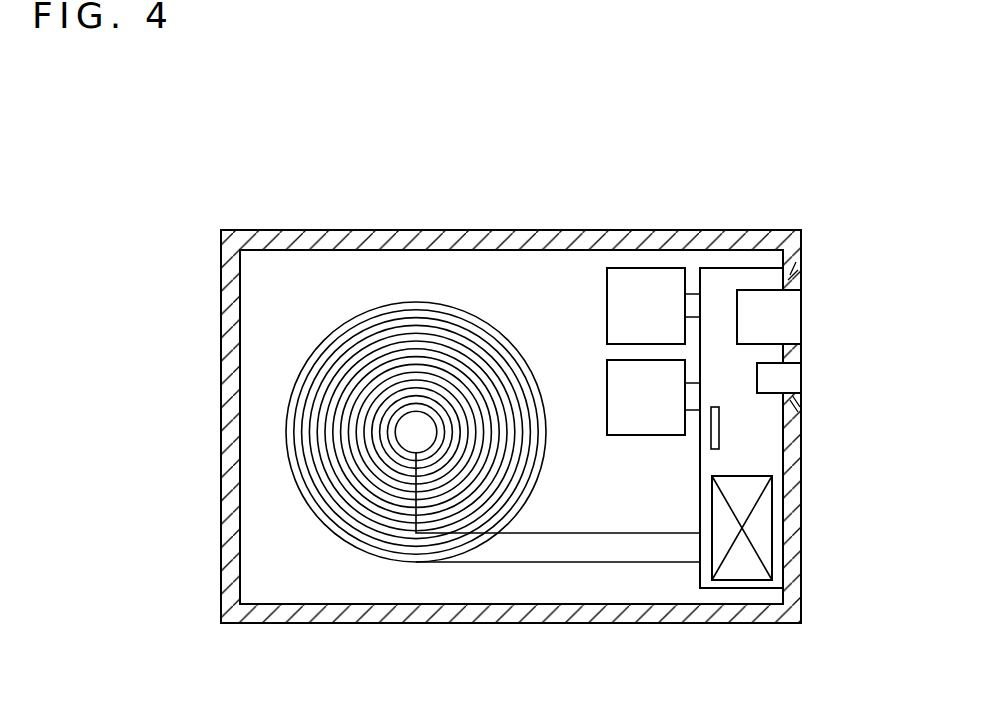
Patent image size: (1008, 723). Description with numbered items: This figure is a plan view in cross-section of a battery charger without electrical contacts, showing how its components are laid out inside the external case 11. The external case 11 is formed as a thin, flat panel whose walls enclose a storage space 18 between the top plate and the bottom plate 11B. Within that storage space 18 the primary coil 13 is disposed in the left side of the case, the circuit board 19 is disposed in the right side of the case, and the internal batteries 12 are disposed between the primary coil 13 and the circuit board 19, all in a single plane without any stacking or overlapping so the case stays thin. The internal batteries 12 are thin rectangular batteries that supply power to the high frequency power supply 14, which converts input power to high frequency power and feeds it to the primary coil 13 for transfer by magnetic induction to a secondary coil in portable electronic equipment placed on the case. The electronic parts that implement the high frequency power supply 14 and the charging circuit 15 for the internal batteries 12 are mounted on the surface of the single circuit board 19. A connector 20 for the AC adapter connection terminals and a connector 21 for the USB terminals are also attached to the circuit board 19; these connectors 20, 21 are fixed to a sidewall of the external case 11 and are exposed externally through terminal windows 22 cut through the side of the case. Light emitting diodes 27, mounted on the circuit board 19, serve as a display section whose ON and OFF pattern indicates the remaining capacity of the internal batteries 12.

The external case 11 is at (397, 182).
The bottom plate 11B is at (543, 373).
The internal batteries 12 is at (646, 288).
The primary coil 13 is at (344, 326).
The high frequency power supply 14 is at (758, 532).
The charging circuit 15 is at (862, 567).
The storage space 18 is at (569, 255).
The circuit board 19 is at (758, 456).
The connector 20 is at (757, 300).
The connector 21 is at (790, 375).
The terminal windows 22 is at (793, 288).
The light emitting diodes 27 is at (720, 413).